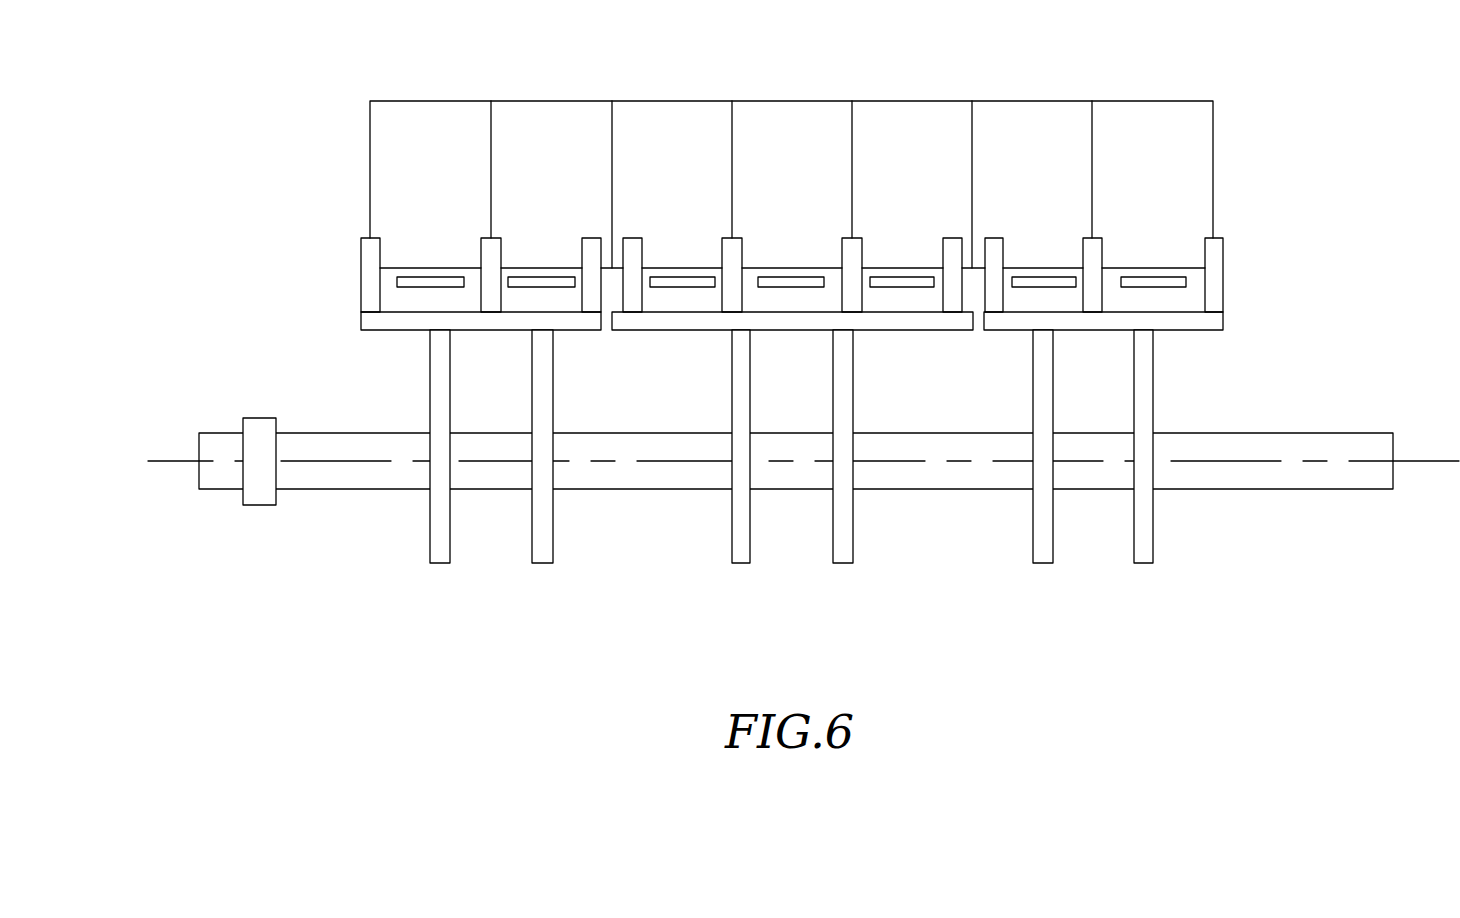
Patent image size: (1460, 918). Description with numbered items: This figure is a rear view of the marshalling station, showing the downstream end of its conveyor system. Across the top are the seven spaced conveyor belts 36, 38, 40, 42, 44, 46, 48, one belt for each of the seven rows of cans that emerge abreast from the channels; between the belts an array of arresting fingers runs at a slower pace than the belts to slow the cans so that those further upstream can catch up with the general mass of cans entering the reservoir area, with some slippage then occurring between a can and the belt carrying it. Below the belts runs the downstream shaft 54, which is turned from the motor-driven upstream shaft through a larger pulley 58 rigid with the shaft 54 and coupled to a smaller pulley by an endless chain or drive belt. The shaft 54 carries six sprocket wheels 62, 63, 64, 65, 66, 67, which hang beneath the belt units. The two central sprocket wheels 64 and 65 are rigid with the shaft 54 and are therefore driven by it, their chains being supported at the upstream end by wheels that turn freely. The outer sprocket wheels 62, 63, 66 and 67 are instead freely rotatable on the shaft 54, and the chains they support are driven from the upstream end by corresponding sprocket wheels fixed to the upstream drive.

The conveyor belt 36 is at (1158, 277).
The conveyor belt 38 is at (1047, 277).
The conveyor belt 40 is at (904, 277).
The conveyor belt 42 is at (797, 277).
The conveyor belt 44 is at (679, 277).
The conveyor belt 46 is at (542, 277).
The conveyor belt 48 is at (427, 277).
The downstream shaft 54 is at (1303, 433).
The larger pulley 58 is at (258, 418).
The sprocket wheel 62 is at (431, 590).
The sprocket wheel 63 is at (535, 590).
The sprocket wheel 64 is at (741, 590).
The sprocket wheel 65 is at (846, 589).
The sprocket wheel 66 is at (1052, 589).
The sprocket wheel 67 is at (1154, 589).